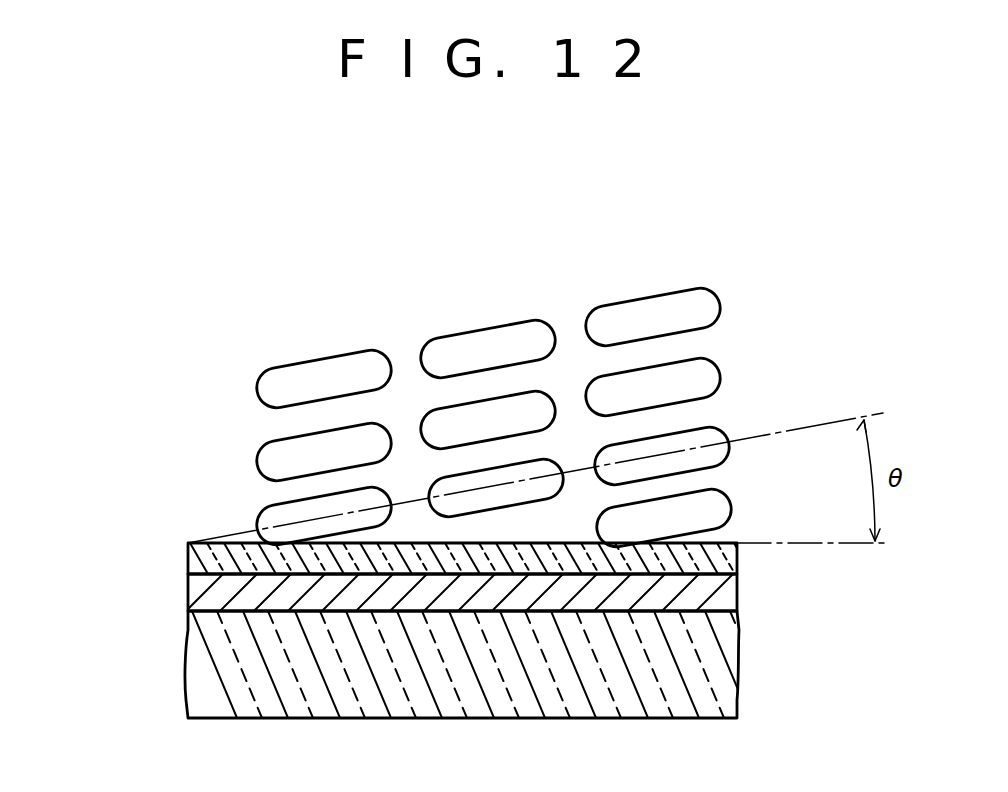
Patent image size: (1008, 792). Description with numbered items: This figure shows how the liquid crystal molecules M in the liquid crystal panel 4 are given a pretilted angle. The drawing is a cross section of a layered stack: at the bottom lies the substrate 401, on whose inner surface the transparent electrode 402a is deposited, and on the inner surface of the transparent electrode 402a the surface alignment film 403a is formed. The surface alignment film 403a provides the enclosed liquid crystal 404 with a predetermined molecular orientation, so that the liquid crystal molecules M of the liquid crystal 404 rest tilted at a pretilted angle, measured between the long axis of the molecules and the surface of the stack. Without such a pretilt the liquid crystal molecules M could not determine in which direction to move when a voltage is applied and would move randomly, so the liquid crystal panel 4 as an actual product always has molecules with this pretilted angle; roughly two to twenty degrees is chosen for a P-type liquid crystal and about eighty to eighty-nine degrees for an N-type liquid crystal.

The liquid crystal panel 4 is at (425, 367).
The liquid crystal 404 is at (425, 388).
The liquid crystal molecules M is at (657, 310).
The surface alignment film 403a is at (200, 563).
The transparent electrode 402a is at (198, 593).
The substrate 401 is at (205, 673).